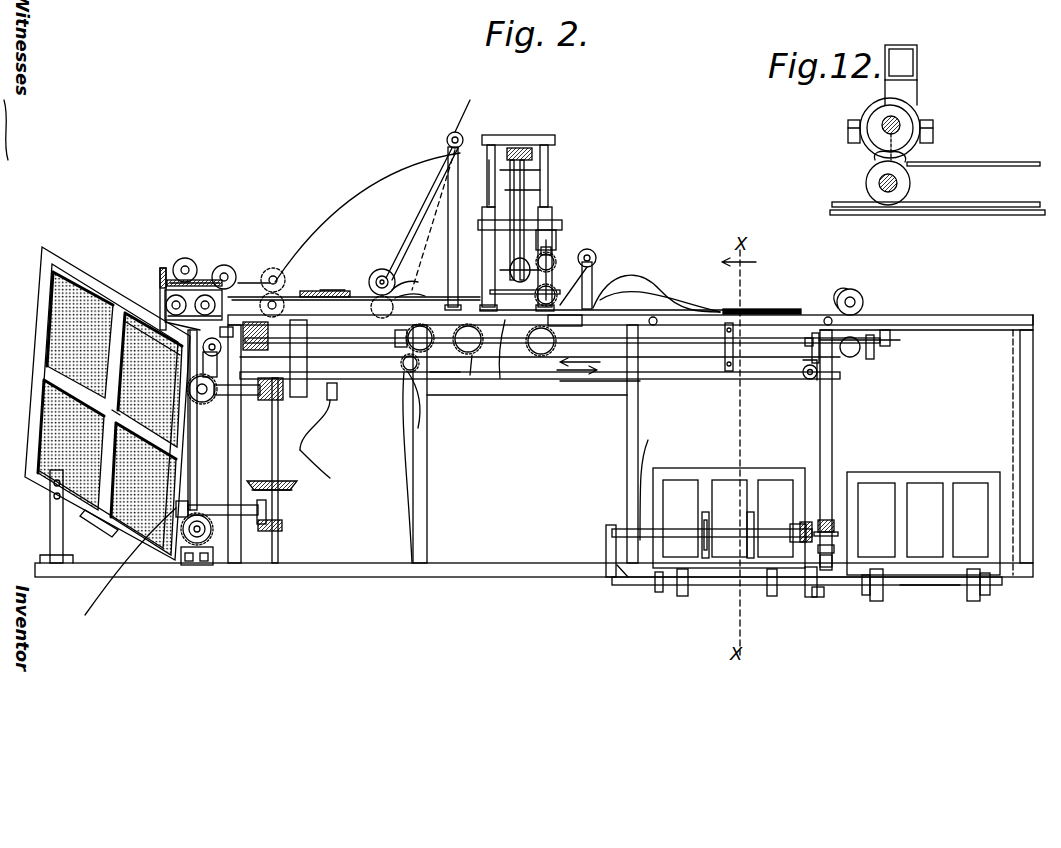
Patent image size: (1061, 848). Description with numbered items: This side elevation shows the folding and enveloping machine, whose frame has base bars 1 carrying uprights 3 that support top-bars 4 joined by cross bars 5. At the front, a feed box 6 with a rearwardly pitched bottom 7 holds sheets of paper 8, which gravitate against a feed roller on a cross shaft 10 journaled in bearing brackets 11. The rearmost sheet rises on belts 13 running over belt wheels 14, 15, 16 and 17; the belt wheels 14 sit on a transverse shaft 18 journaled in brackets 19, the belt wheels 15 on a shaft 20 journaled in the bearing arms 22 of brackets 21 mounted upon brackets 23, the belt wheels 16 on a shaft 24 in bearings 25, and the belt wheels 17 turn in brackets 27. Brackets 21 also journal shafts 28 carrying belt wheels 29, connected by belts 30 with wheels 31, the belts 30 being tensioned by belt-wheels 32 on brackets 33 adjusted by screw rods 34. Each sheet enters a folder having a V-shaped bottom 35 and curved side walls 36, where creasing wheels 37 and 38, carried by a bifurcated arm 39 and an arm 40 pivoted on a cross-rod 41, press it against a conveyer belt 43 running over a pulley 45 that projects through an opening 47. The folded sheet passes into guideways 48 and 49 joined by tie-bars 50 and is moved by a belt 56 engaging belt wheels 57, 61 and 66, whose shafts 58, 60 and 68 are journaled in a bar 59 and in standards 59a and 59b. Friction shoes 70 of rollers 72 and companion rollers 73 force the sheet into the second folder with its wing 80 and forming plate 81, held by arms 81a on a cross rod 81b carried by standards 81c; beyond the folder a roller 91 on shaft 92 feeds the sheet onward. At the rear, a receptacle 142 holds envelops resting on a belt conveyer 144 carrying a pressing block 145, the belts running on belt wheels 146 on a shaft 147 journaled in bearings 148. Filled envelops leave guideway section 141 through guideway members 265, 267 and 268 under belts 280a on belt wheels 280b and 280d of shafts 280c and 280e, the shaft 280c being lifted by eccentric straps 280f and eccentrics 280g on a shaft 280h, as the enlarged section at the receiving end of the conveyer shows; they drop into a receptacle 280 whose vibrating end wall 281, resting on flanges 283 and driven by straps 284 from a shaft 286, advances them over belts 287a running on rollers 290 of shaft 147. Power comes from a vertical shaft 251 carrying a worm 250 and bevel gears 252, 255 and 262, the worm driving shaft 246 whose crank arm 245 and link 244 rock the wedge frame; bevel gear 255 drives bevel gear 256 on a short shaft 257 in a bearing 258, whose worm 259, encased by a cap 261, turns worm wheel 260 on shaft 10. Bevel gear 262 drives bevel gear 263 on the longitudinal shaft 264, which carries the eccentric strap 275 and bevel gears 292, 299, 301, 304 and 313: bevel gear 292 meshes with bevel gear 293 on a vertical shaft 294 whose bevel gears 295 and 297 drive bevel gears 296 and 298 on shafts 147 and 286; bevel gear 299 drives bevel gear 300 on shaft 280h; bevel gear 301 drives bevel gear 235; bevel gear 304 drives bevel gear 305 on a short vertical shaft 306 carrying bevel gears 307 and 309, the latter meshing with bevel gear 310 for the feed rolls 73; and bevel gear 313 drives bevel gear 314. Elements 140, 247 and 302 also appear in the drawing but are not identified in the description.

In FIG. 2, the base frame 1 is at (70, 568).
In FIG. 2, the upright standards 3 is at (427, 465).
In FIG. 2, the table 4 is at (980, 322).
In FIG. 12, the square bar 5 is at (917, 52).
In FIG. 2, the feed frame 6 is at (40, 412).
In FIG. 2, the bracket 7 is at (98, 522).
In FIG. 2, the feed panel 8 is at (60, 305).
In FIG. 2, the gear 10 is at (190, 542).
In FIG. 2, the shaft 11 is at (197, 542).
In FIG. 2, the panel bar 13 is at (188, 335).
In FIG. 2, the panel bar 14 is at (130, 402).
In FIG. 2, the roller housing 15 is at (205, 300).
In FIG. 2, the guide 16 is at (280, 288).
In FIG. 2, the column 17 is at (205, 352).
In FIG. 2, the column 18 is at (197, 410).
In FIG. 2, the vertical shaft 19 is at (270, 400).
In FIG. 2, the roller 20 is at (210, 295).
In FIG. 2, the roller 21 is at (172, 300).
In FIG. 2, the feed table 22 is at (232, 296).
In FIG. 2, the bracket 23 is at (195, 330).
In FIG. 2, the guide bar 24 is at (335, 292).
In FIG. 2, the roller 25 is at (378, 300).
In FIG. 2, the gear 27 is at (186, 388).
In FIG. 2, the link 28 is at (212, 345).
In FIG. 2, the plate 29 is at (170, 312).
In FIG. 2, the roller 30 is at (222, 265).
In FIG. 2, the roller 31 is at (273, 268).
In FIG. 2, the plate 32 is at (172, 283).
In FIG. 2, the roller 33 is at (185, 258).
In FIG. 2, the plate 34 is at (160, 275).
In FIG. 2, the rack 35 is at (325, 298).
In FIG. 2, the arm 36 is at (400, 186).
In FIG. 2, the guide 37 is at (255, 300).
In FIG. 2, the roller 38 is at (382, 268).
In FIG. 2, the roller 39 is at (272, 292).
In FIG. 2, the link 40 is at (448, 150).
In FIG. 2, the pivot 41 is at (450, 132).
In FIG. 2, the guide 43 is at (396, 300).
In FIG. 2, the guide 45 is at (410, 282).
In FIG. 2, the lever 47 is at (462, 128).
In FIG. 2, the head block 48 is at (510, 148).
In FIG. 2, the rod 49 is at (510, 330).
In FIG. 2, the cross bar 50 is at (512, 172).
In FIG. 2, the post 56 is at (485, 230).
In FIG. 2, the column 57 is at (486, 212).
In FIG. 2, the column 58 is at (488, 172).
In FIG. 2, the table plate 59 is at (480, 310).
In FIG. 2, the rod 59a is at (520, 135).
In FIG. 2, the rod 59b is at (555, 195).
In FIG. 2, the column 60 is at (548, 150).
In FIG. 2, the cross bar 61 is at (524, 192).
In FIG. 2, the screw 66 is at (552, 225).
In FIG. 2, the cross head 68 is at (548, 153).
In FIG. 2, the cam 70 is at (510, 262).
In FIG. 2, the shaft 72 is at (510, 270).
In FIG. 2, the bar 73 is at (490, 291).
In FIG. 2, the cam track 80 is at (670, 300).
In FIG. 2, the plate 81 is at (765, 310).
In FIG. 2, the standard 81a is at (595, 265).
In FIG. 2, the pivot 81b is at (596, 255).
In FIG. 2, the cam arm 81c is at (640, 285).
In FIG. 2, the roller bracket 91 is at (850, 288).
In FIG. 2, the roller 92 is at (858, 298).
In FIG. 2, the collar 140 is at (992, 593).
In FIG. 2, the column 141 is at (310, 395).
In FIG. 2, the rod 142 is at (1013, 475).
In FIG. 2, the collar 144 is at (876, 601).
In FIG. 2, the frame 145 is at (918, 473).
In FIG. 2, the collar 146 is at (884, 593).
In FIG. 2, the shaft 147 is at (930, 585).
In FIG. 2, the collar 148 is at (658, 587).
In FIG. 2, the rod 235 is at (472, 360).
In FIG. 2, the block 244 is at (336, 400).
In FIG. 2, the link 245 is at (330, 402).
In FIG. 2, the link 246 is at (302, 452).
In FIG. 2, the shaft 247 is at (222, 395).
In FIG. 2, the bevel gear 250 is at (276, 400).
In FIG. 2, the bevel gear 251 is at (300, 484).
In FIG. 2, the bevel gear 252 is at (292, 490).
In FIG. 2, the bevel gear 255 is at (284, 526).
In FIG. 2, the bracket 256 is at (257, 527).
In FIG. 2, the gear 257 is at (185, 537).
In FIG. 2, the shaft 258 is at (205, 533).
In FIG. 2, the coupling 259 is at (205, 490).
In FIG. 2, the bearing 260 is at (210, 568).
In FIG. 2, the link 261 is at (122, 569).
In FIG. 2, the shaft 262 is at (345, 342).
In FIG. 2, the pulley 263 is at (272, 338).
In FIG. 2, the bar 264 is at (690, 356).
In FIG. 2, the bar 265 is at (580, 381).
In FIG. 2, the bar 267 is at (676, 380).
In FIG. 2, the bracket 275 is at (729, 372).
In FIG. 2, the rod 280 is at (661, 478).
In FIG. 2, the plate 280a is at (438, 378).
In FIG. 12, the plate 280a is at (1040, 220).
In FIG. 2, the roller 280b is at (405, 375).
In FIG. 12, the roller 280b is at (910, 183).
In FIG. 2, the pin 280c is at (406, 410).
In FIG. 12, the pin 280c is at (879, 183).
In FIG. 2, the roller 280d is at (802, 375).
In FIG. 2, the bracket 280e is at (810, 380).
In FIG. 12, the lug 280f is at (935, 130).
In FIG. 12, the ring 280g is at (912, 120).
In FIG. 12, the pin 280h is at (900, 120).
In FIG. 2, the frame 281 is at (710, 468).
In FIG. 2, the bracket 283 is at (635, 575).
In FIG. 2, the cam 284 is at (712, 524).
In FIG. 2, the rod 286 is at (616, 528).
In FIG. 2, the collar 287a is at (772, 597).
In FIG. 2, the shaft 290 is at (685, 588).
In FIG. 2, the pulley 292 is at (810, 350).
In FIG. 2, the shaft 293 is at (838, 355).
In FIG. 2, the vertical rod 294 is at (820, 427).
In FIG. 2, the collar 295 is at (826, 587).
In FIG. 2, the bevel gear 296 is at (812, 598).
In FIG. 2, the bevel gear 297 is at (836, 542).
In FIG. 2, the bevel gear 298 is at (806, 522).
In FIG. 2, the gear 299 is at (402, 360).
In FIG. 2, the gear 300 is at (424, 327).
In FIG. 2, the gear 301 is at (465, 353).
In FIG. 2, the space 302 is at (527, 420).
In FIG. 2, the direction arrows 304 is at (555, 365).
In FIG. 2, the gear 305 is at (555, 332).
In FIG. 2, the arm 306 is at (590, 295).
In FIG. 2, the screw head 307 is at (553, 248).
In FIG. 2, the gear 309 is at (552, 262).
In FIG. 2, the gear 310 is at (553, 292).
In FIG. 2, the pulley 313 is at (878, 360).
In FIG. 2, the bearing 314 is at (855, 358).
In FIG. 12, the plate 268 is at (1027, 196).